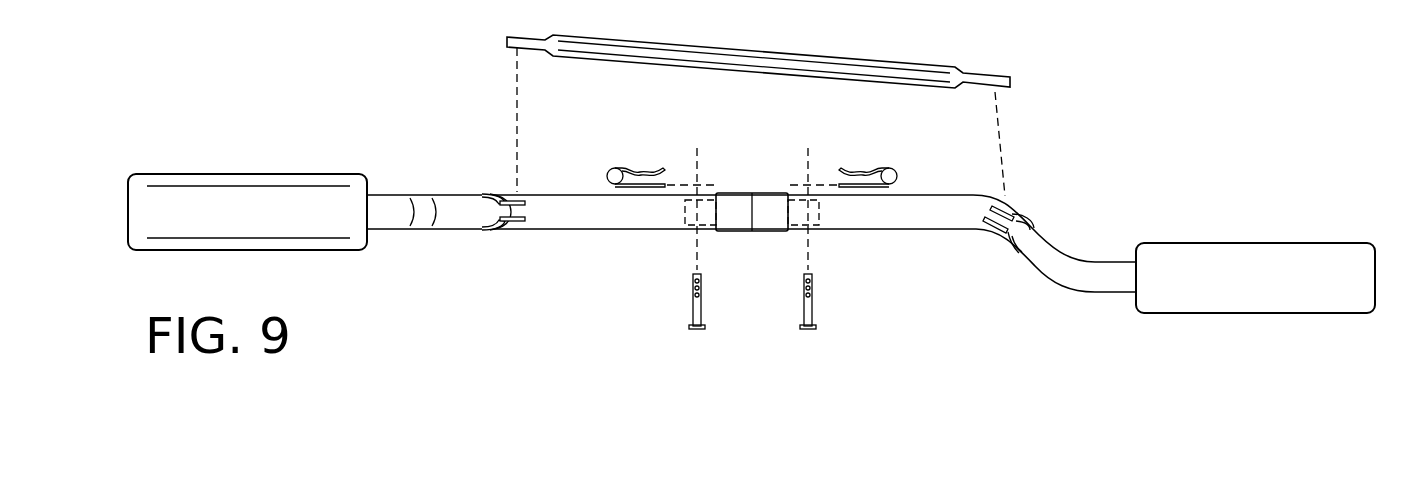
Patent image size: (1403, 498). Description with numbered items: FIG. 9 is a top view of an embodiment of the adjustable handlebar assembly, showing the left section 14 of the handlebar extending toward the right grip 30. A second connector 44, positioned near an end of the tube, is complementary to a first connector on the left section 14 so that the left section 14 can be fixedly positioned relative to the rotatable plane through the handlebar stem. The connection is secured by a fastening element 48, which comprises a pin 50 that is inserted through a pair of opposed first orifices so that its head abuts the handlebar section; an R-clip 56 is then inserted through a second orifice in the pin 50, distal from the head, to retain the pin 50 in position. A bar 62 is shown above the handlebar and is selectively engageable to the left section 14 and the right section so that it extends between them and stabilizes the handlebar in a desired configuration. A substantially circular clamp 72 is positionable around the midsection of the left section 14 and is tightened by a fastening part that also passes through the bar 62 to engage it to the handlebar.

The left section 14 is at (432, 234).
The right grip 30 is at (1181, 282).
The second connector 44 is at (813, 345).
The fastening element 48 is at (690, 305).
The pin 50 is at (814, 303).
The R-clip 56 is at (895, 162).
The bar 62 is at (858, 65).
The clamp 72 is at (1048, 211).